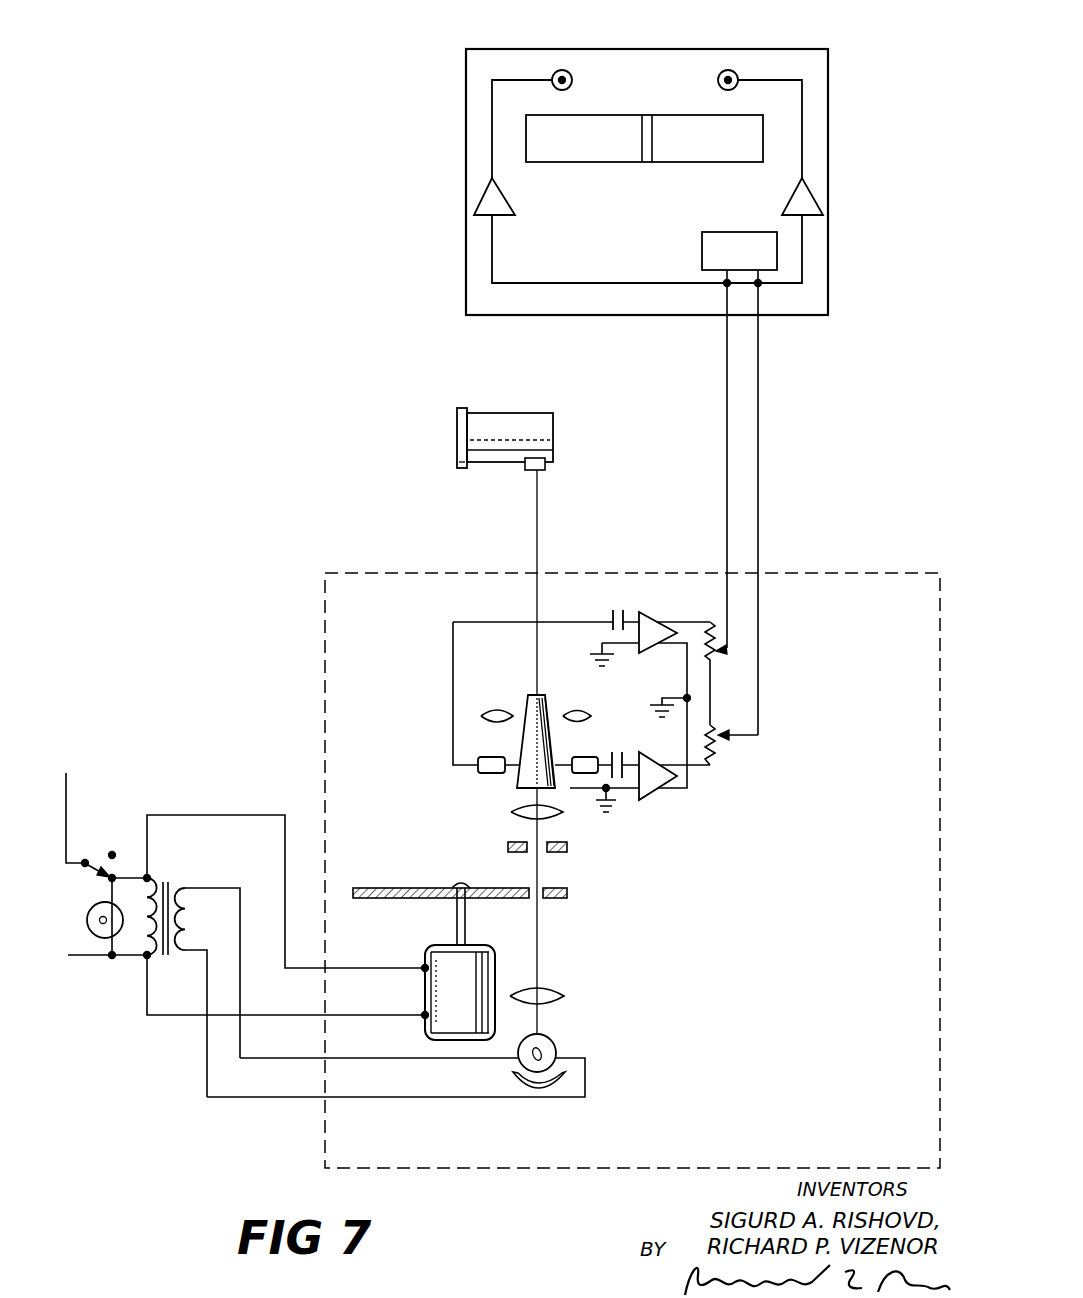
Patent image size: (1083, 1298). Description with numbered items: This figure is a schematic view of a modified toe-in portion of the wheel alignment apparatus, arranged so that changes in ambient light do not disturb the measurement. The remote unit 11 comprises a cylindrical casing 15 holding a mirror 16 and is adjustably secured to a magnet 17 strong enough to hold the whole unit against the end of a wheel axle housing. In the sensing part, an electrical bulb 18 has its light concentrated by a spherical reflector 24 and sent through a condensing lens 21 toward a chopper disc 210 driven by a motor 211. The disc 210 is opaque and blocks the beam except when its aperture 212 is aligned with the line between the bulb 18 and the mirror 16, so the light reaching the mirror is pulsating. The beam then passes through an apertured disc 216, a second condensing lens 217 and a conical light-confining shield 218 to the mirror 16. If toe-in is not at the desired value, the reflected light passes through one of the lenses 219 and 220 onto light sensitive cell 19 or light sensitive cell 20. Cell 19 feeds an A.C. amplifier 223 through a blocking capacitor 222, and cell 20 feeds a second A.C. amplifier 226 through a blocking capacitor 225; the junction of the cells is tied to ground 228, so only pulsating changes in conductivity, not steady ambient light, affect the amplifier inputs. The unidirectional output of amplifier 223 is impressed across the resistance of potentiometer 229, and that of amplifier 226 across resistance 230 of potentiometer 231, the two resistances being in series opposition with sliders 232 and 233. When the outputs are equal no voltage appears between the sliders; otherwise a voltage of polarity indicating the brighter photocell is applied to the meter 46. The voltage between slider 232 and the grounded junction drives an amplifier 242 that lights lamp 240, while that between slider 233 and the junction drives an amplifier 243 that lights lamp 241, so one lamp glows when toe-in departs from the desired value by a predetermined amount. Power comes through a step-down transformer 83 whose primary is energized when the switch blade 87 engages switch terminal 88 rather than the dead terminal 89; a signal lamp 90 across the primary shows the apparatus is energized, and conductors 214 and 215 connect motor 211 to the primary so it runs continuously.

The unit 11 is at (500, 413).
The cylindrical casing 15 is at (500, 427).
The mirror 16 is at (547, 470).
The magnet 17 is at (457, 446).
The electrical bulb 18 is at (552, 1044).
The light sensitive cell 19 is at (488, 773).
The light sensitive cell 20 is at (586, 757).
The condensing lens 21 is at (560, 996).
The spherical reflector 24 is at (562, 1081).
The meter 46 is at (702, 253).
The transformer 83 is at (175, 868).
The switch blade 87 is at (98, 868).
The switch terminal 88 is at (107, 881).
The dead terminal 89 is at (113, 853).
The signal lamp 90 is at (100, 937).
The chopper disc 210 is at (396, 890).
The motor 211 is at (440, 962).
The aperture 212 is at (543, 900).
The conductor 214 is at (268, 814).
The conductor 215 is at (183, 1017).
The apertured disc 216 is at (567, 850).
The condensing lens 217 is at (530, 812).
The conical light-confining shield 218 is at (530, 700).
The lens 219 is at (480, 712).
The lens 220 is at (583, 708).
The blocking capacitor 222 is at (620, 606).
The A.C. amplifier 223 is at (645, 612).
The blocking capacitor 225 is at (621, 752).
The A.C. amplifier 226 is at (652, 797).
The ground 228 is at (713, 624).
The potentiometer 229 is at (740, 643).
The resistance 230 is at (716, 751).
The potentiometer 231 is at (736, 801).
The slider 232 is at (722, 656).
The slider 233 is at (722, 744).
The lamp 240 is at (567, 71).
The lamp 241 is at (735, 71).
The amplifier 242 is at (474, 203).
The amplifier 243 is at (828, 200).